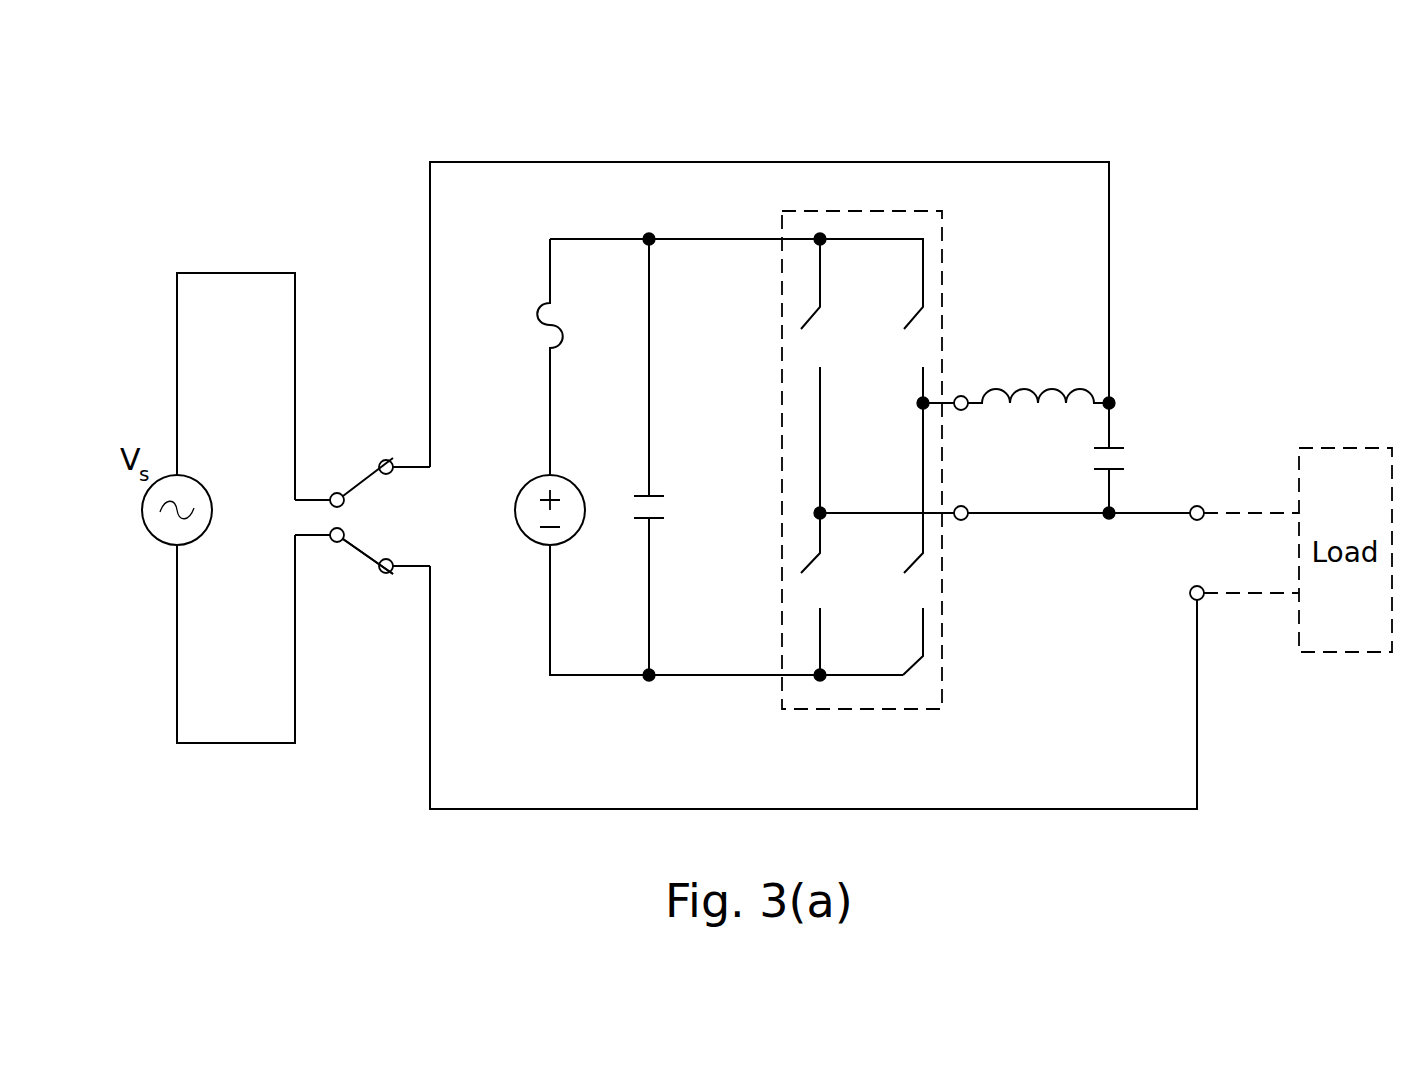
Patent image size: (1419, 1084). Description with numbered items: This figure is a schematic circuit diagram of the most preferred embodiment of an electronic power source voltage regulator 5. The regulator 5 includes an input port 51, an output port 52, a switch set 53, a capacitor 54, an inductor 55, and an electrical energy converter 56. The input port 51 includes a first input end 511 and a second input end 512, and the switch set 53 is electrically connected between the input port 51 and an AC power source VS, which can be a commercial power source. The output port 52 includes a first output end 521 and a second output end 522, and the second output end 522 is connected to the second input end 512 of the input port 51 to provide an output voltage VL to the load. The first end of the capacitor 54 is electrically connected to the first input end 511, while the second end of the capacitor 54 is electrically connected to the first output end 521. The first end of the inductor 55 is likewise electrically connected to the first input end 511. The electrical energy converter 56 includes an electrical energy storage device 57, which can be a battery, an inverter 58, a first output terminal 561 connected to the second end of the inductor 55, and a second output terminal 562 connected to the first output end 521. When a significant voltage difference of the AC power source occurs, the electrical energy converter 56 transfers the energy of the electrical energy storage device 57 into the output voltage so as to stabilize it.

The electronic power source voltage regulator 5 is at (1133, 154).
The input port 51 is at (369, 510).
The first input end 511 is at (378, 485).
The second input end 512 is at (387, 551).
The switch set 53 is at (359, 571).
The output port 52 is at (1133, 539).
The first output end 521 is at (1215, 530).
The second output end 522 is at (1215, 594).
The capacitor 54 is at (1131, 461).
The inductor 55 is at (1041, 383).
The electrical energy converter 56 is at (741, 466).
The first output terminal 561 is at (964, 383).
The second output terminal 562 is at (912, 494).
The electrical energy storage device 57 is at (534, 518).
The inverter 58 is at (877, 710).